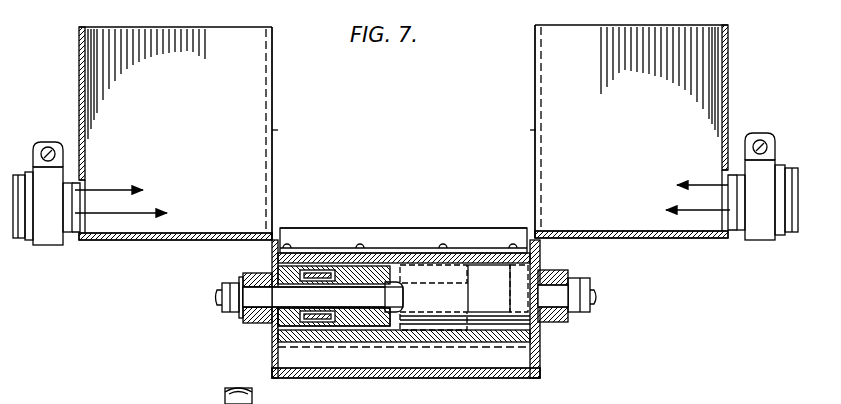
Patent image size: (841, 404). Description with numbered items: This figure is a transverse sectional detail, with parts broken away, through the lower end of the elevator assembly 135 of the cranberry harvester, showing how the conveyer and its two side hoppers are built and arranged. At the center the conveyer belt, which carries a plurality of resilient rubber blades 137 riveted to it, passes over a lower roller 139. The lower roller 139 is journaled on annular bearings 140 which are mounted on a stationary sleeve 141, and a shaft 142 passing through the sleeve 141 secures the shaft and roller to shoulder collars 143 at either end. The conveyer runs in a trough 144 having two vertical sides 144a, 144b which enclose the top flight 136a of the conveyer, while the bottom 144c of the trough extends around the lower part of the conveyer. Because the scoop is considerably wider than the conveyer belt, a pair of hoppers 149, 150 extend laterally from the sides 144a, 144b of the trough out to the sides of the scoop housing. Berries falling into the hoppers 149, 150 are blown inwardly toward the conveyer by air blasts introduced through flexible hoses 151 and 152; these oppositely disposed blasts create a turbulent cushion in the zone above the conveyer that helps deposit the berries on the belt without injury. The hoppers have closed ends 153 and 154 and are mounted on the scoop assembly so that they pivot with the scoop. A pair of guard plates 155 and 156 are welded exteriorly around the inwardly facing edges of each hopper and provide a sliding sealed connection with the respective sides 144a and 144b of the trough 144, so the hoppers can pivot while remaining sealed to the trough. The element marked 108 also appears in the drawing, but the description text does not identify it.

The pressure plate 108 is at (225, 396).
The elevator assembly 135 is at (472, 164).
The top flight 136a is at (490, 253).
The resilient blades 137 is at (365, 228).
The lower roller 139 is at (385, 327).
The annular bearings 140 is at (320, 322).
The stationary sleeve 141 is at (280, 326).
The shaft 142 is at (595, 297).
The shoulder collars 143 is at (253, 271).
The trough 144 is at (490, 375).
The vertical side 144a is at (535, 190).
The vertical side 144b is at (277, 183).
The bottom 144c is at (330, 365).
The hopper 149 is at (675, 238).
The hopper 150 is at (172, 240).
The flexible hose 151 is at (778, 238).
The flexible hose 152 is at (20, 240).
The closed end 153 is at (728, 60).
The closed end 154 is at (79, 52).
The guard plate 155 is at (537, 62).
The guard plate 156 is at (272, 62).